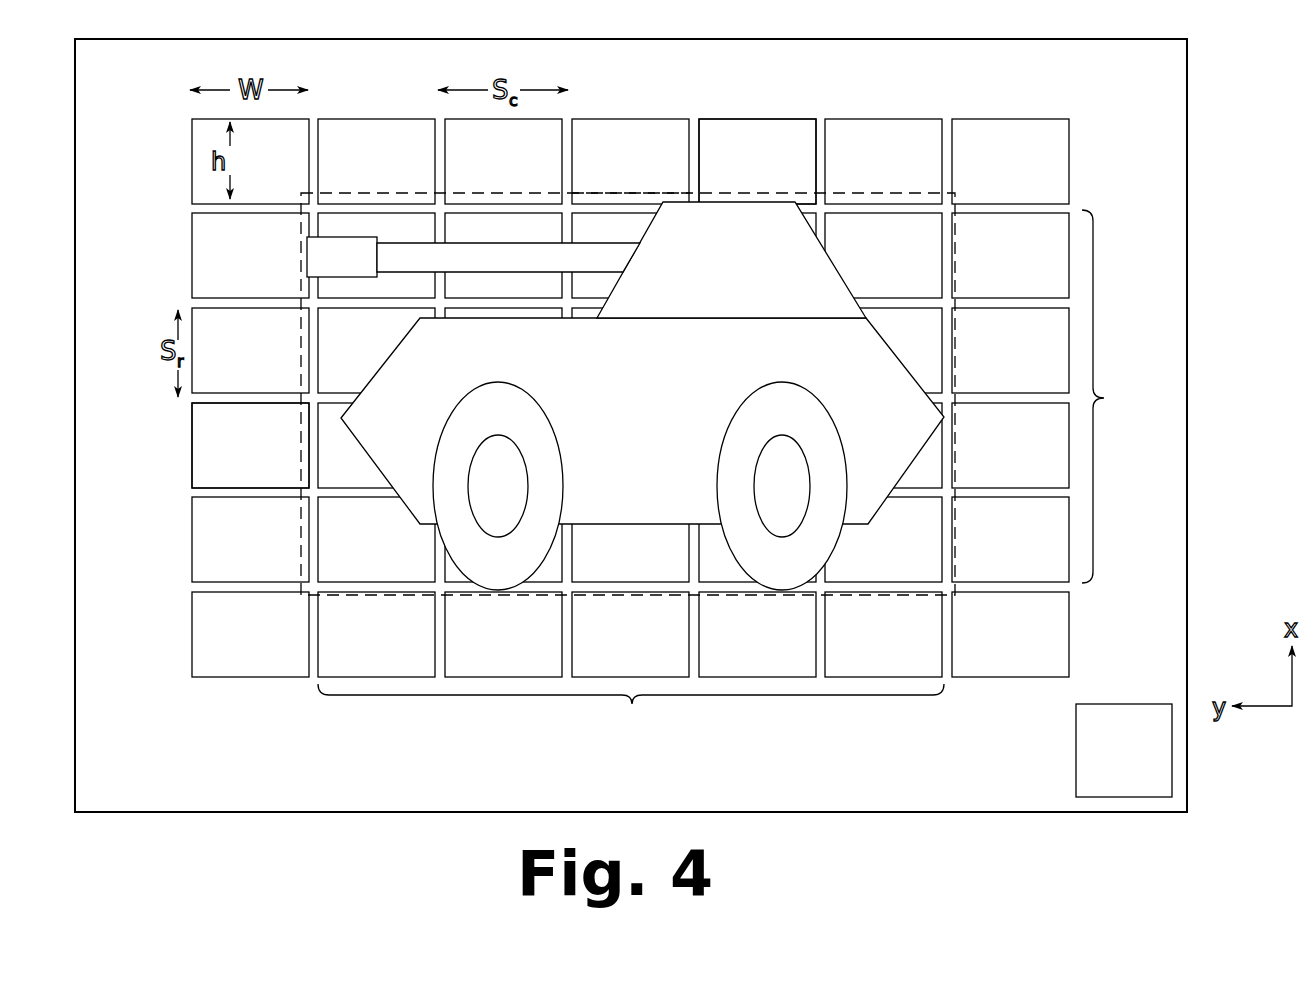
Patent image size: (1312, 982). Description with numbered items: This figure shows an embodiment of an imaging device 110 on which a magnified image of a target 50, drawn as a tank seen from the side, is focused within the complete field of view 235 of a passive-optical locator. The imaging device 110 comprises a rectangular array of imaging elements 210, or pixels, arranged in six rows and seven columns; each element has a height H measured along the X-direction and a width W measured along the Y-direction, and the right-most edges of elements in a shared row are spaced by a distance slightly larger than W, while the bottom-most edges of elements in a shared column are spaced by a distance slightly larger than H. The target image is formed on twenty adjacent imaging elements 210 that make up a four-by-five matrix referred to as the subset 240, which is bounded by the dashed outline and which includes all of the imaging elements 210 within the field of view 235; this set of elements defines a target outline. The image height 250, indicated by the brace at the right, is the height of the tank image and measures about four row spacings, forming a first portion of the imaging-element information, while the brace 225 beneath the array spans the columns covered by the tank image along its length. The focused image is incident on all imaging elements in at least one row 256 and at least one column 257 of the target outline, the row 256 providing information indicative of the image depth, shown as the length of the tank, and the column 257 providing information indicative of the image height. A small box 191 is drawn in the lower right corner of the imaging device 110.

The imaging device 110 is at (267, 828).
The imaging elements 210 is at (1070, 145).
The column 257 is at (760, 112).
The row 256 is at (172, 449).
The field of view 235 is at (462, 192).
The subset 240 is at (596, 192).
The target 50 is at (838, 274).
The image height 250 is at (1121, 396).
The group of columns 225 is at (631, 710).
The indicator box 191 is at (1076, 768).